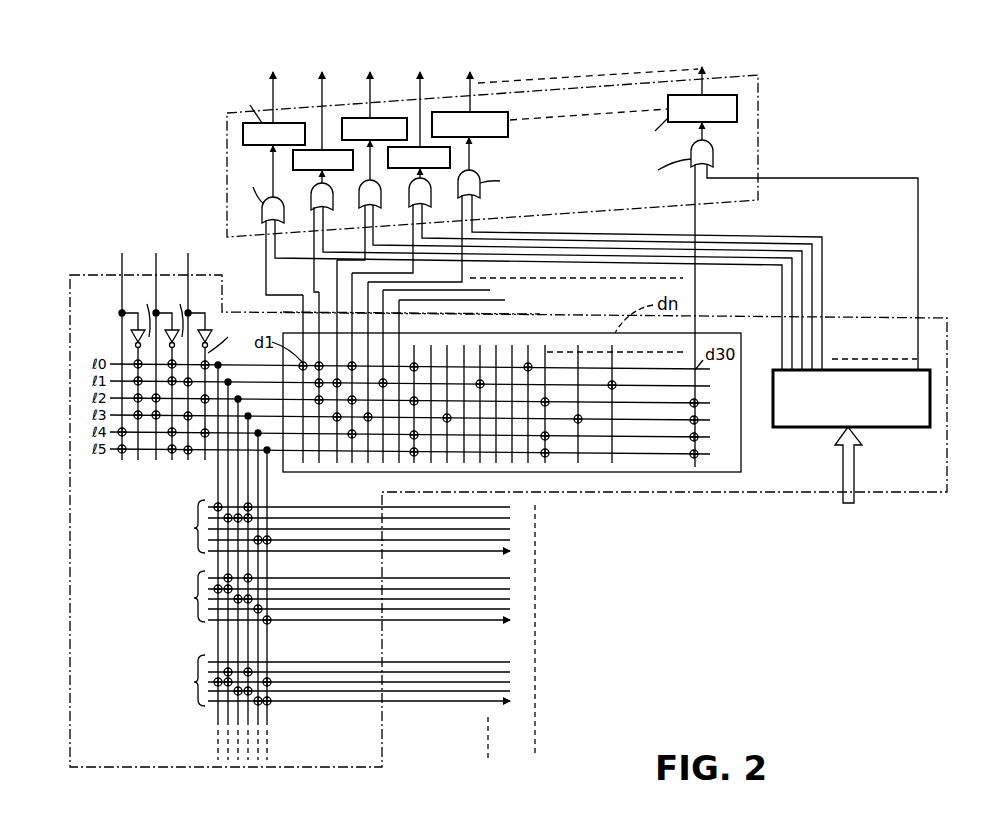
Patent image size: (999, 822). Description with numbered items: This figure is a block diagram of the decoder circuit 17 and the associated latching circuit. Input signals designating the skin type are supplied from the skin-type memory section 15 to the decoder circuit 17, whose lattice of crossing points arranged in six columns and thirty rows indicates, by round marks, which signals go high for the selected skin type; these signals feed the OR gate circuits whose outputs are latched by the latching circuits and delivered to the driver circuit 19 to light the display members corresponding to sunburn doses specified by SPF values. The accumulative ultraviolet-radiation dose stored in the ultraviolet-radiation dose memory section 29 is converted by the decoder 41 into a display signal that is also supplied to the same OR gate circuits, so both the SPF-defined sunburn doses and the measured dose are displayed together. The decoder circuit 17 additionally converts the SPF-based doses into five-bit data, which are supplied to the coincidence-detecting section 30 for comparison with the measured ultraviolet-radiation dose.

The skin-type memory section 15 is at (203, 231).
The decoder circuit 17 is at (70, 518).
The driver circuit 19 is at (722, 62).
The ultraviolet-radiation dose memory section 29 is at (850, 511).
The coincidence-detecting section 30 is at (434, 631).
The decoder 41 is at (931, 394).